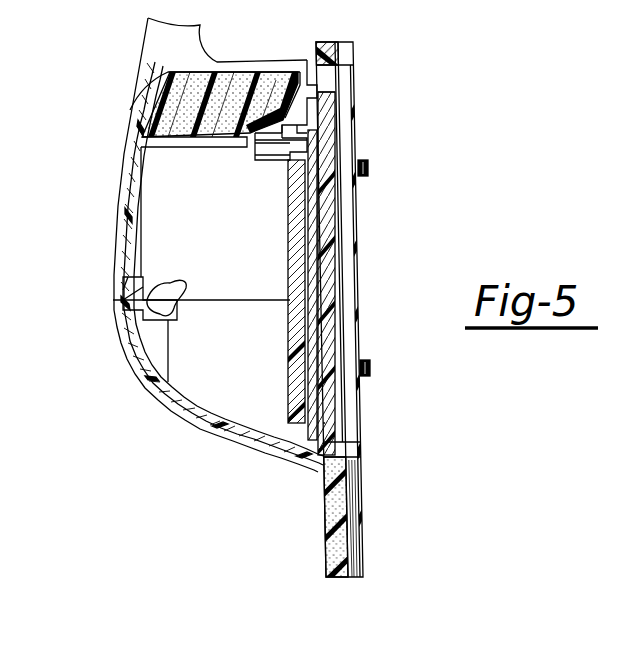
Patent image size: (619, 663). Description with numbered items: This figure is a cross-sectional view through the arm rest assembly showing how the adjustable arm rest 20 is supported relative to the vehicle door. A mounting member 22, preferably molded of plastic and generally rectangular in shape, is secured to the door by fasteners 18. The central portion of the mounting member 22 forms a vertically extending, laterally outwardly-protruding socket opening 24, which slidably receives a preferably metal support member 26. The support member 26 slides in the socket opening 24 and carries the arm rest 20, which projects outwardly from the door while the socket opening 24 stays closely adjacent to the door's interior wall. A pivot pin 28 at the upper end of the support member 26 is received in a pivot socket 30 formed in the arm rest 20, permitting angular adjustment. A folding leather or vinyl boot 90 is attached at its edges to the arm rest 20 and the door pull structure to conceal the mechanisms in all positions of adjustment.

The fasteners 18 is at (368, 166).
The arm rest 20 is at (118, 222).
The mounting member 22 is at (323, 227).
The socket opening 24 is at (292, 267).
The support member 26 is at (313, 330).
The pivot pin 28 is at (288, 140).
The pivot socket 30 is at (297, 133).
The boot 90 is at (170, 276).